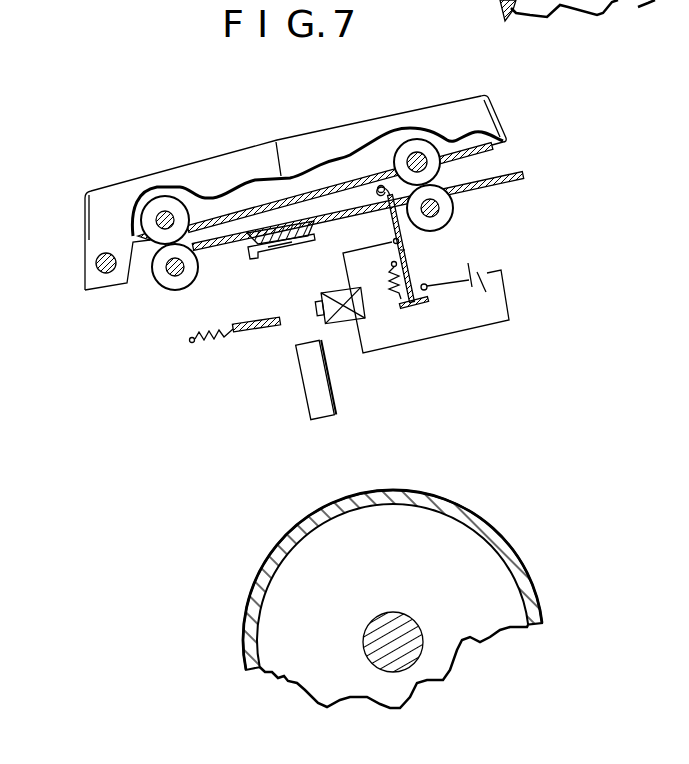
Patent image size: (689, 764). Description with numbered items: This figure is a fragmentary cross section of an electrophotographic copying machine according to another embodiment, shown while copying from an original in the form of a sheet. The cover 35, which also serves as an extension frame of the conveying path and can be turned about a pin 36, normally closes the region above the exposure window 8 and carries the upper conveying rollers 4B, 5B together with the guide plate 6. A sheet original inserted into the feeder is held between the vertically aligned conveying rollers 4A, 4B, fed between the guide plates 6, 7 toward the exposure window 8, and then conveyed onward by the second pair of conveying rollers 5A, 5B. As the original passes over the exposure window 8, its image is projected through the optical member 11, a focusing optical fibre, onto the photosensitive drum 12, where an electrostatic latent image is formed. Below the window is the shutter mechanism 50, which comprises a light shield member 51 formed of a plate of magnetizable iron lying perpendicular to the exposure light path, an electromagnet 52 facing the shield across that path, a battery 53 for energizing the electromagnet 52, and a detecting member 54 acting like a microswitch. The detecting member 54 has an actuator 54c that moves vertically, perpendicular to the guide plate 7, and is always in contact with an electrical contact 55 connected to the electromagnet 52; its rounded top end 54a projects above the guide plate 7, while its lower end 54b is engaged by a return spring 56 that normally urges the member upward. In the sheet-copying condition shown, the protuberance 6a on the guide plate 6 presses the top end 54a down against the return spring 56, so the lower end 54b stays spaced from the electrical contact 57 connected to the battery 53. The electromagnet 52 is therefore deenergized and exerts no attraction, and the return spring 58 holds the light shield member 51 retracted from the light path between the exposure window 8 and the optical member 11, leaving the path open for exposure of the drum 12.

The cover 35 is at (208, 147).
The pin 36 is at (97, 268).
The conveying roller 5A is at (198, 268).
The conveying roller 5B is at (175, 210).
The guide plate 6 is at (262, 208).
The protuberance 6a is at (381, 183).
The guide plate 7 is at (313, 226).
The exposure window 8 is at (281, 253).
The conveying roller 4A is at (453, 209).
The conveying roller 4B is at (432, 152).
The shutter mechanism 50 is at (455, 235).
The light shield member 51 is at (251, 322).
The electromagnet 52 is at (343, 319).
The battery 53 is at (426, 297).
The detecting member 54 is at (415, 275).
The top end 54a is at (377, 188).
The lower end 54b is at (420, 307).
The actuator 54c is at (421, 250).
The electrical contact 55 is at (393, 240).
The return spring 56 is at (390, 280).
The electrical contact 57 is at (428, 289).
The return spring 58 is at (212, 324).
The optical member 11 is at (305, 388).
The photosensitive drum 12 is at (492, 528).